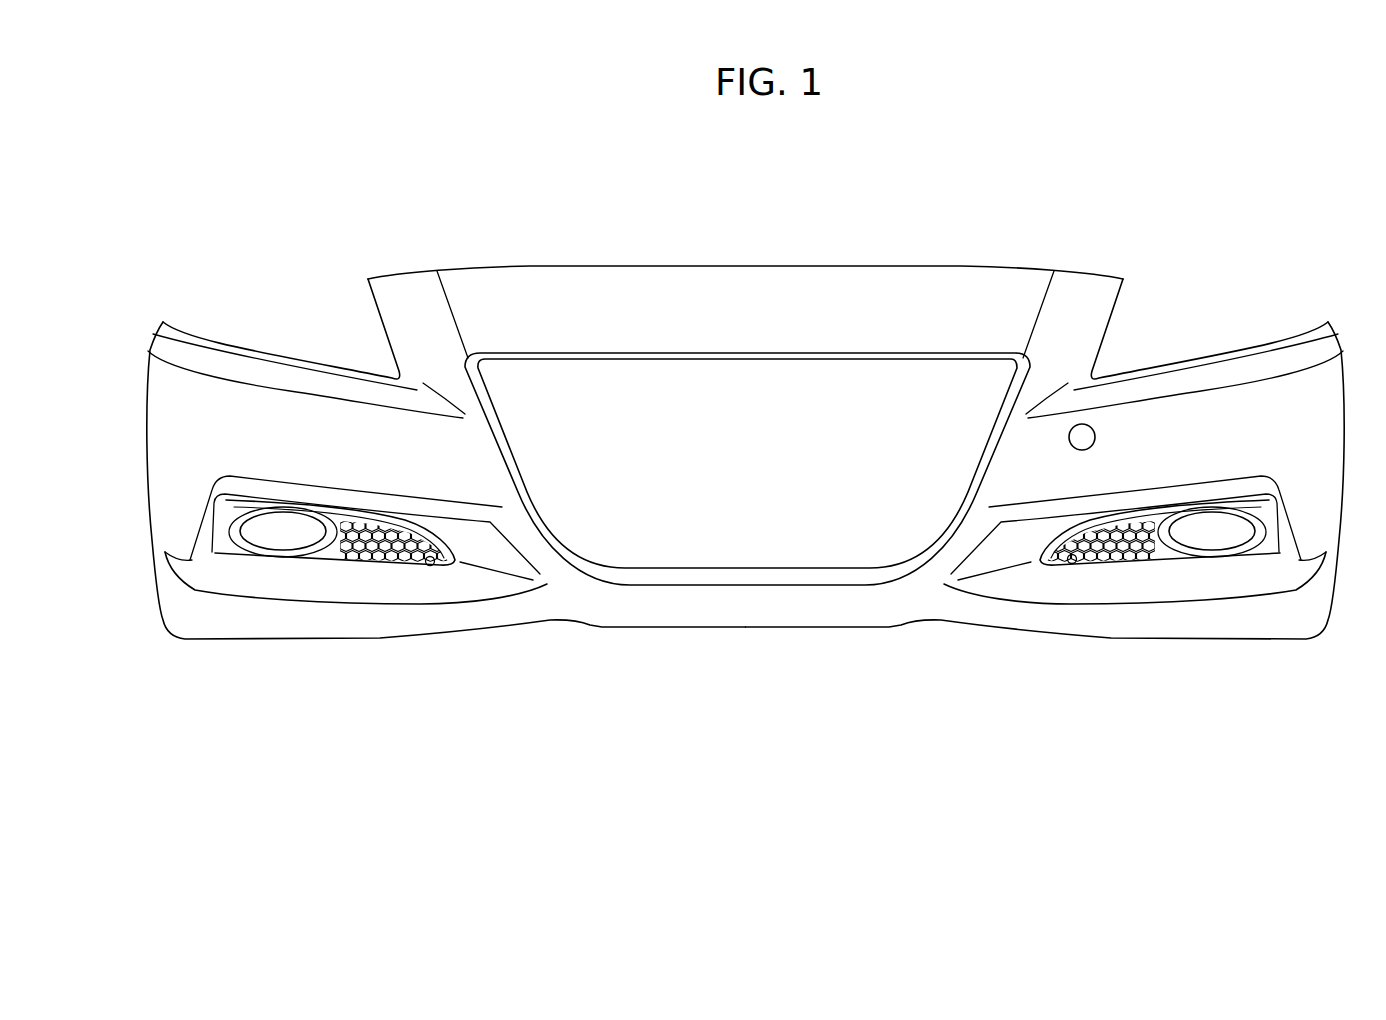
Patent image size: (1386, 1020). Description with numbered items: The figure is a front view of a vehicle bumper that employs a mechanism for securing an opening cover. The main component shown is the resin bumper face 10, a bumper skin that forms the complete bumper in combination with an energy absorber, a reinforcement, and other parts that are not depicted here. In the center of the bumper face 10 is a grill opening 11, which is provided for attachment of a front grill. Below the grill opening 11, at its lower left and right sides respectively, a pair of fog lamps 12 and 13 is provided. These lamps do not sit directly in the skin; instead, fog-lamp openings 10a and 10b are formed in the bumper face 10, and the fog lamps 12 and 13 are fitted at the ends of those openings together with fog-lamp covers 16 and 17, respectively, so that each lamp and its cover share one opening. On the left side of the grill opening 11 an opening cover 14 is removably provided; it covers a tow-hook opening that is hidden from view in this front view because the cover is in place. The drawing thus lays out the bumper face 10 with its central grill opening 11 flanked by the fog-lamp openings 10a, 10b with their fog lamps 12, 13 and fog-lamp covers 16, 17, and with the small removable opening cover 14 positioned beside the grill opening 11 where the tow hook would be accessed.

The bumper face 10 is at (504, 262).
The fog-lamp opening 10a is at (1070, 563).
The fog-lamp opening 10b is at (428, 564).
The grill opening 11 is at (641, 358).
The fog lamp 12 is at (1212, 534).
The fog lamp 13 is at (283, 533).
The opening cover 14 is at (1083, 437).
The fog-lamp cover 16 is at (1122, 558).
The fog-lamp cover 17 is at (360, 556).